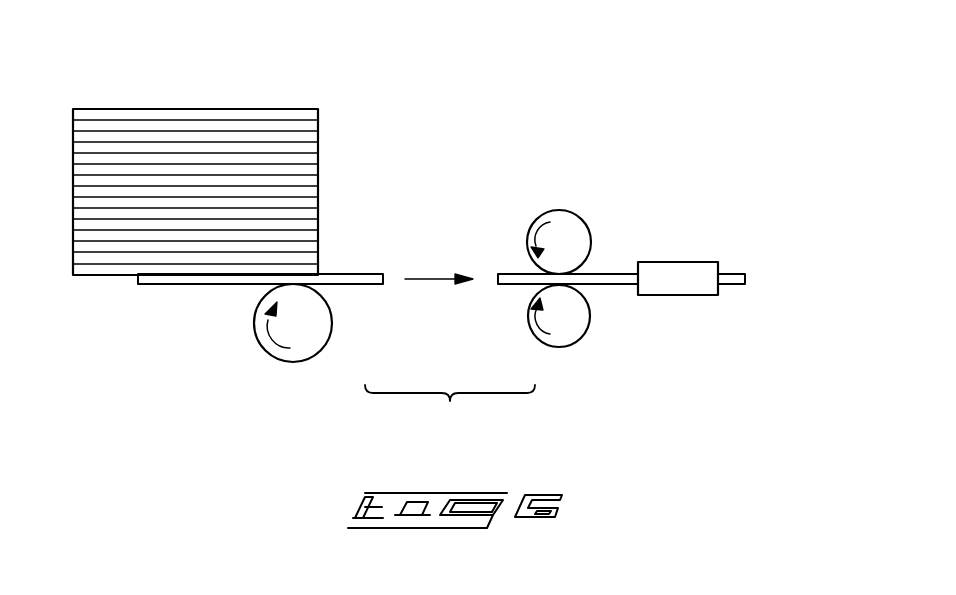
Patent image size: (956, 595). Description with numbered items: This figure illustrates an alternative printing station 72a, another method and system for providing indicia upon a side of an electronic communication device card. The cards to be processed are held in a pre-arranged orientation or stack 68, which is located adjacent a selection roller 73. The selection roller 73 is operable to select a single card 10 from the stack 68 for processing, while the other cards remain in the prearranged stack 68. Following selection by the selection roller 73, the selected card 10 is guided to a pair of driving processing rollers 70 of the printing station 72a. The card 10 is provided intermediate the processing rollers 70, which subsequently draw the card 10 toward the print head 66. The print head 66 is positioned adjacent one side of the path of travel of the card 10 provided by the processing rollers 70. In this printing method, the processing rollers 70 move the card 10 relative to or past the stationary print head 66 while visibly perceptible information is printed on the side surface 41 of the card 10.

The stack 68 is at (240, 106).
The card 10 is at (352, 273).
The selection roller 73 is at (263, 350).
The driving processing rollers 70 is at (547, 210).
The side surface 41 is at (610, 278).
The print head 66 is at (682, 297).
The alternative printing station 72a is at (733, 160).